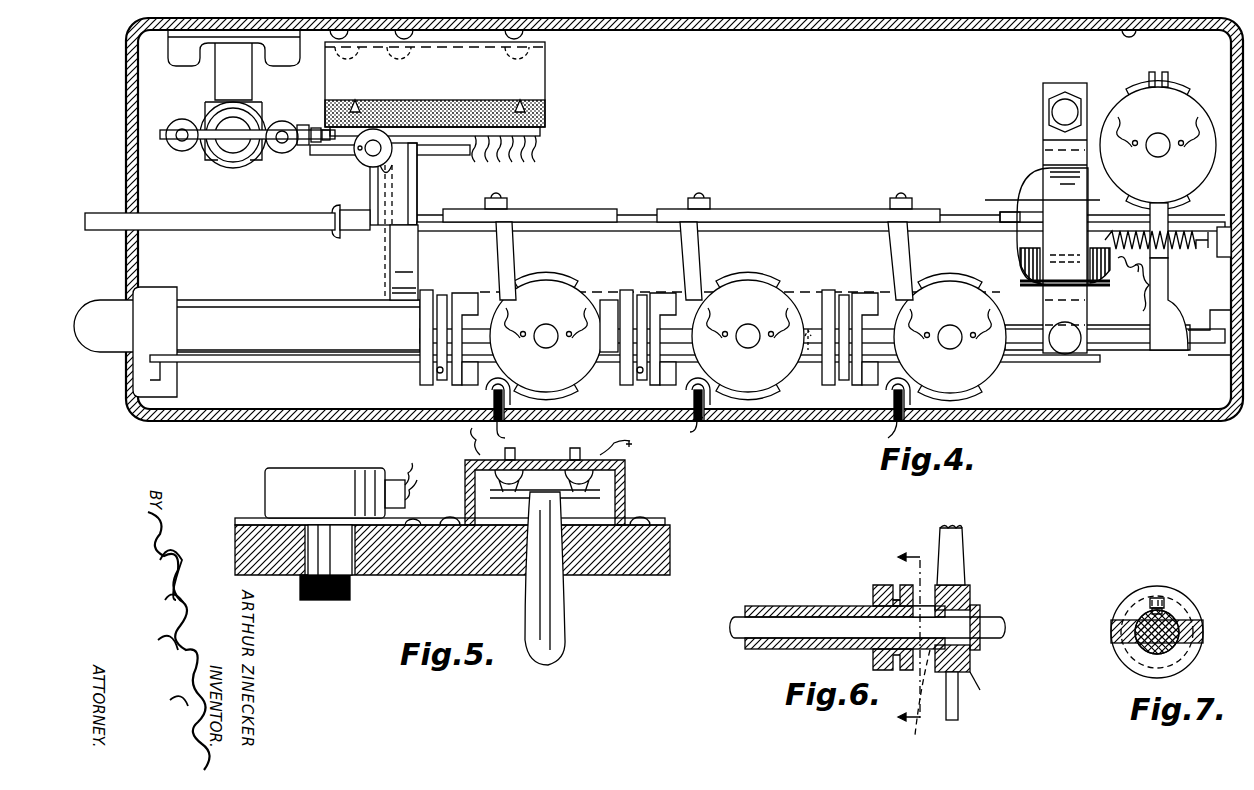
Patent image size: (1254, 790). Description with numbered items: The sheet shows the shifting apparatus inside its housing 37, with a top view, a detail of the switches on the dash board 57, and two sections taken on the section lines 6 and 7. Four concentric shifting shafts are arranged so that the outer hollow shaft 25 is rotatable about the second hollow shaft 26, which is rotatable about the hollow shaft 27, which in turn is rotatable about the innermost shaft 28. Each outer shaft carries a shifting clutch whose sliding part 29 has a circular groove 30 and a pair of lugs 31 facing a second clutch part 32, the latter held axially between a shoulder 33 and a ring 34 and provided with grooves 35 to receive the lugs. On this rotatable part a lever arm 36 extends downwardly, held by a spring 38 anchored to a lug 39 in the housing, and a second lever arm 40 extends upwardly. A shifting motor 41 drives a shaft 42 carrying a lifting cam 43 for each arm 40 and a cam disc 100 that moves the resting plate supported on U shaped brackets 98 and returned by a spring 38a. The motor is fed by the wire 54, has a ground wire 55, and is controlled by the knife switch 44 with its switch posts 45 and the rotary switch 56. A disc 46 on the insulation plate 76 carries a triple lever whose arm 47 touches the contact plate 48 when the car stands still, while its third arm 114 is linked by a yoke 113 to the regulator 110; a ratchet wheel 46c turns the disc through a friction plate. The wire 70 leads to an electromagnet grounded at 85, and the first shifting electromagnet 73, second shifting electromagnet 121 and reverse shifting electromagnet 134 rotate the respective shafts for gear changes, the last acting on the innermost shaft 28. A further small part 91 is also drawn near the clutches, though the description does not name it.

In FIG. 4, the section line 6— 6 is at (808, 350).
In FIG. 6, the section line 7— 7 is at (906, 638).
In FIG. 4, the outer hollow shaft 25 is at (238, 316).
In FIG. 4, the second hollow shaft 26 is at (609, 302).
In FIG. 4, the hollow shaft 27 is at (818, 328).
In FIG. 6, the hollow shaft 27 is at (770, 606).
In FIG. 7, the hollow shaft 27 is at (1173, 610).
In FIG. 4, the innermost shaft 28 is at (1020, 332).
In FIG. 6, the innermost shaft 28 is at (1005, 627).
In FIG. 7, the innermost shaft 28 is at (1180, 650).
In FIG. 4, the sliding clutch part 29 is at (426, 300).
In FIG. 6, the sliding clutch part 29 is at (880, 590).
In FIG. 6, the circular groove 30 is at (893, 670).
In FIG. 4, the lugs 31 is at (464, 298).
In FIG. 6, the lugs 31 is at (918, 738).
In FIG. 7, the lugs 31 is at (1115, 644).
In FIG. 4, the second clutch part 32 is at (476, 372).
In FIG. 6, the second clutch part 32 is at (972, 590).
In FIG. 6, the shoulder 33 is at (923, 600).
In FIG. 6, the ring 34 is at (980, 608).
In FIG. 6, the grooves 35 is at (975, 680).
In FIG. 6, the lever arm 36 is at (958, 705).
In FIG. 4, the housing 37 is at (1068, 421).
In FIG. 4, the spring 38 is at (504, 395).
In FIG. 4, the spring 38a is at (1185, 245).
In FIG. 4, the lug 39 is at (505, 430).
In FIG. 4, the second lever arm 40 is at (512, 244).
In FIG. 6, the second lever arm 40 is at (965, 545).
In FIG. 4, the shifting motor 41 is at (1030, 185).
In FIG. 4, the shaft 42 is at (252, 222).
In FIG. 4, the lifting cam 43 is at (505, 200).
In FIG. 5, the knife switch 44 is at (514, 490).
In FIG. 5, the switch posts 45 is at (578, 492).
In FIG. 4, the disc 46 is at (397, 145).
In FIG. 4, the ratchet wheel 46c is at (405, 172).
In FIG. 4, the arm 47 is at (455, 143).
In FIG. 4, the contact plate 48 is at (480, 140).
In FIG. 4, the wire 54 is at (1125, 270).
In FIG. 4, the ground wire 55 is at (1143, 292).
In FIG. 5, the rotary switch 56 is at (355, 478).
In FIG. 5, the dash board 57 is at (446, 570).
In FIG. 4, the wire 70 is at (360, 160).
In FIG. 4, the first shifting electromagnet 73 is at (558, 298).
In FIG. 4, the insulation plate 76 is at (545, 112).
In FIG. 4, the ground 85 is at (380, 170).
In FIG. 4, the pin 91 is at (438, 373).
In FIG. 4, the U shaped brackets 98 is at (1032, 206).
In FIG. 4, the cam disc 100 is at (395, 258).
In FIG. 4, the regulator 110 is at (222, 147).
In FIG. 4, the yoke 113 is at (246, 160).
In FIG. 4, the third arm 114 is at (305, 125).
In FIG. 4, the second shifting electromagnet 121 is at (764, 298).
In FIG. 4, the shifting electromagnet 134 is at (1172, 108).